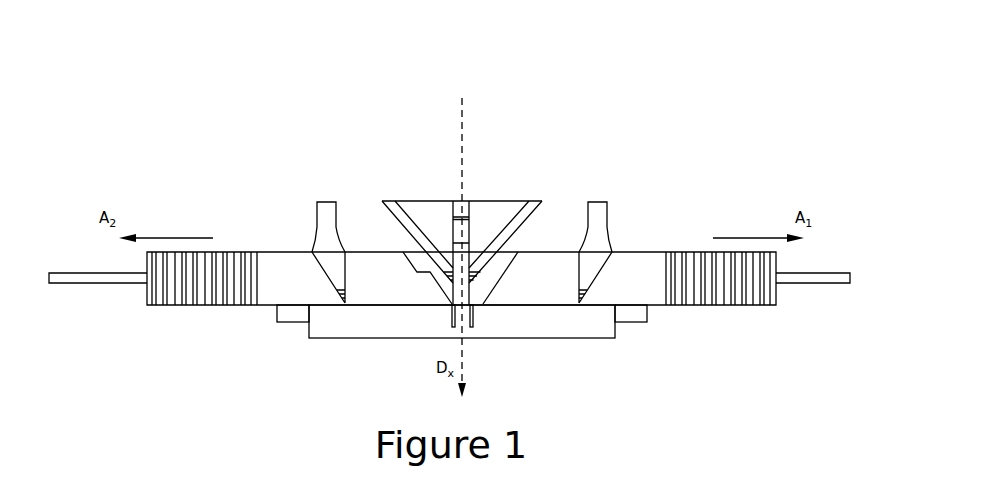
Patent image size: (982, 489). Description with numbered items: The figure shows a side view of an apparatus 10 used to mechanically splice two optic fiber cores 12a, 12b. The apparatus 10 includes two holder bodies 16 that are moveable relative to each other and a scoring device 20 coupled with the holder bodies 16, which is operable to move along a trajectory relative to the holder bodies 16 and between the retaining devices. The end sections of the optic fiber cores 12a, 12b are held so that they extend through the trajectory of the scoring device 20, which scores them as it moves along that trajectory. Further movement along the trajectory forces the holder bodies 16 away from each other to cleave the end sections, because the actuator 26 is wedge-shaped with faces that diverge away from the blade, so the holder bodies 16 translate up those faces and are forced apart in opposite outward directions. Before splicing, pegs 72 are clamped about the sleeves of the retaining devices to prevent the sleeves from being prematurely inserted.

The apparatus 10 is at (632, 188).
The optic fiber core 12a is at (827, 278).
The optic fiber core 12b is at (82, 282).
The holder body 16 is at (235, 248).
The scoring device 20 is at (395, 193).
The actuator 26 is at (483, 202).
The peg 72 is at (323, 202).